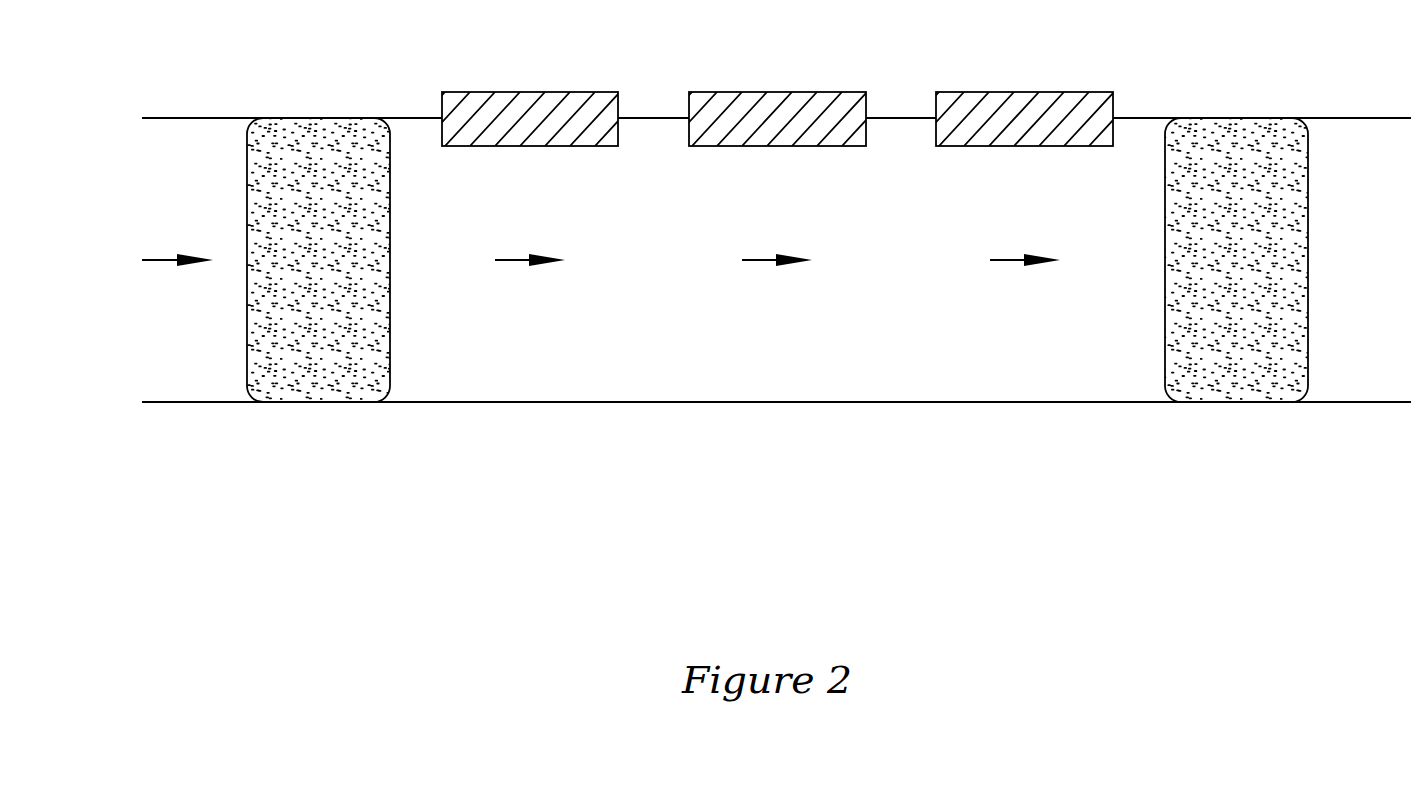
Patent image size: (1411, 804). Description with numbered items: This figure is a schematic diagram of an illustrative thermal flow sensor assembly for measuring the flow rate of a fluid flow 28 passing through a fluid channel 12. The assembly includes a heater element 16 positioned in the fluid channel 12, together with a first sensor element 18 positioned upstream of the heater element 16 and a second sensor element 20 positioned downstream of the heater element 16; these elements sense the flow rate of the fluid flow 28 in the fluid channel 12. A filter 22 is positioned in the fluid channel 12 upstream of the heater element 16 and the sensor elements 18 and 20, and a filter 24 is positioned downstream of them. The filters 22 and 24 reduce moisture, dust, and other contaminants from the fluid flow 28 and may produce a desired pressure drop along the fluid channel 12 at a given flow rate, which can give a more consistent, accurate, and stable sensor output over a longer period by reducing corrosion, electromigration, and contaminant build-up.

The fluid channel 12 is at (430, 152).
The heater element 16 is at (777, 92).
The first sensor element 18 is at (530, 92).
The second sensor element 20 is at (1023, 92).
The filter 22 is at (302, 132).
The filter 24 is at (1240, 130).
The fluid flow 28 is at (155, 260).